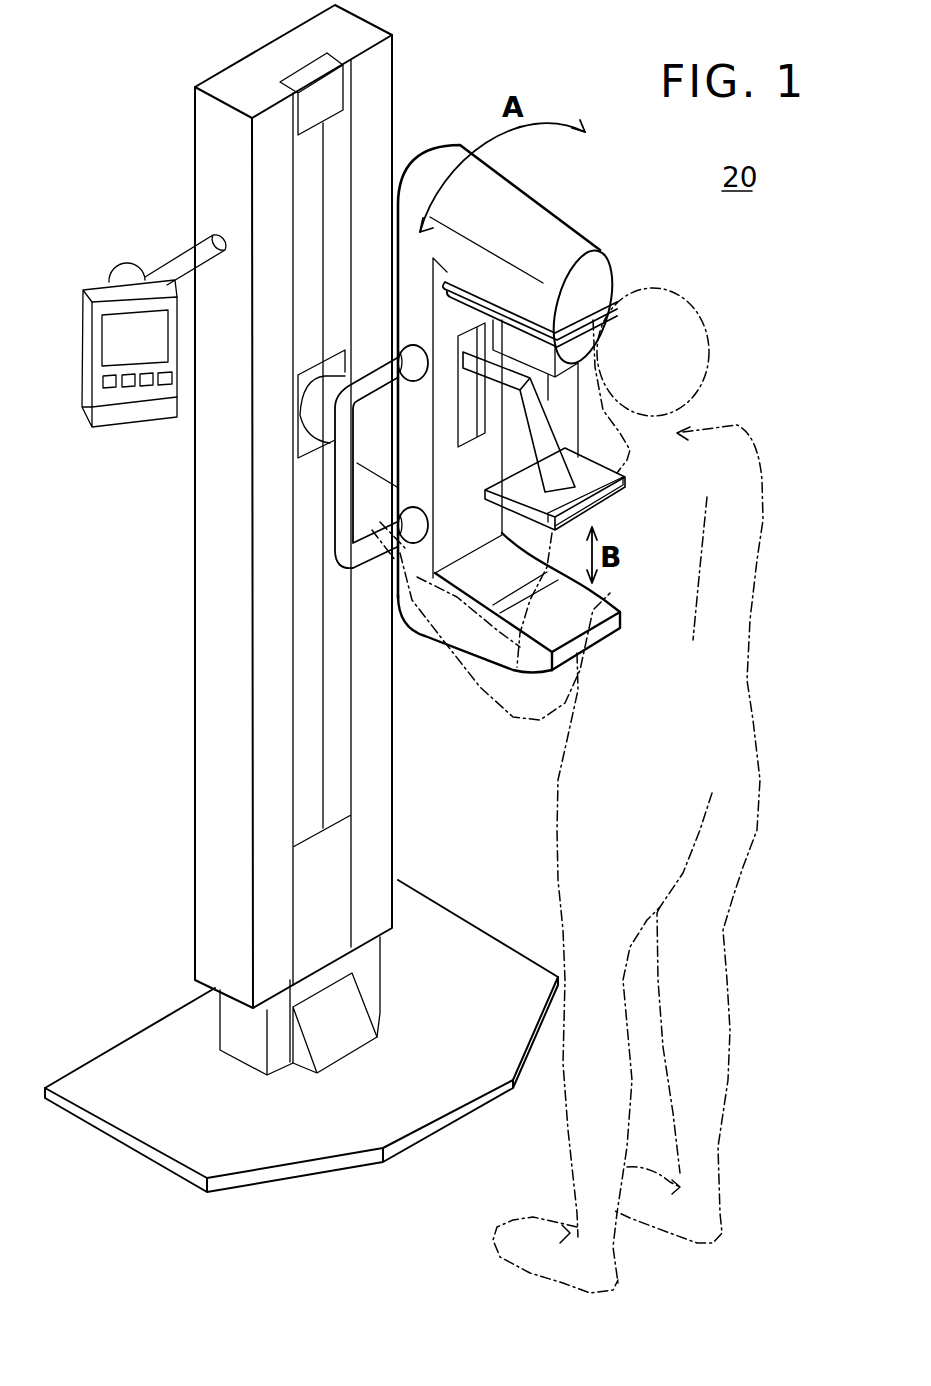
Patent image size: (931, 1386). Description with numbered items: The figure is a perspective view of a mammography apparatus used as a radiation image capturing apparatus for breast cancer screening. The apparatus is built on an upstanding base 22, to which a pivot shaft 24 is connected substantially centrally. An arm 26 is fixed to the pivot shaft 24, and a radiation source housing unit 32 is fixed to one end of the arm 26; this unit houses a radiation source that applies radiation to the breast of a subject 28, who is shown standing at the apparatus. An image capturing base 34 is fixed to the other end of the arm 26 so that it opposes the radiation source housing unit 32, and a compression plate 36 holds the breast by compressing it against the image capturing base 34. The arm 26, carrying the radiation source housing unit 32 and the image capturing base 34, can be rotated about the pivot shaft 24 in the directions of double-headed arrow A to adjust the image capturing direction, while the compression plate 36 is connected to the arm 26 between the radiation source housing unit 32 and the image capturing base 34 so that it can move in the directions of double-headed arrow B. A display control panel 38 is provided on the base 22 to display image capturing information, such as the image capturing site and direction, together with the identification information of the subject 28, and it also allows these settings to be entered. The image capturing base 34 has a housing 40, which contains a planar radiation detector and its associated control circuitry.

The base 22 is at (212, 578).
The pivot shaft 24 is at (377, 425).
The arm 26 is at (413, 284).
The subject 28 is at (730, 712).
The radiation source housing unit 32 is at (615, 276).
The image capturing base 34 is at (562, 683).
The compression plate 36 is at (590, 482).
The display control panel 38 is at (110, 342).
The housing 40 is at (491, 621).